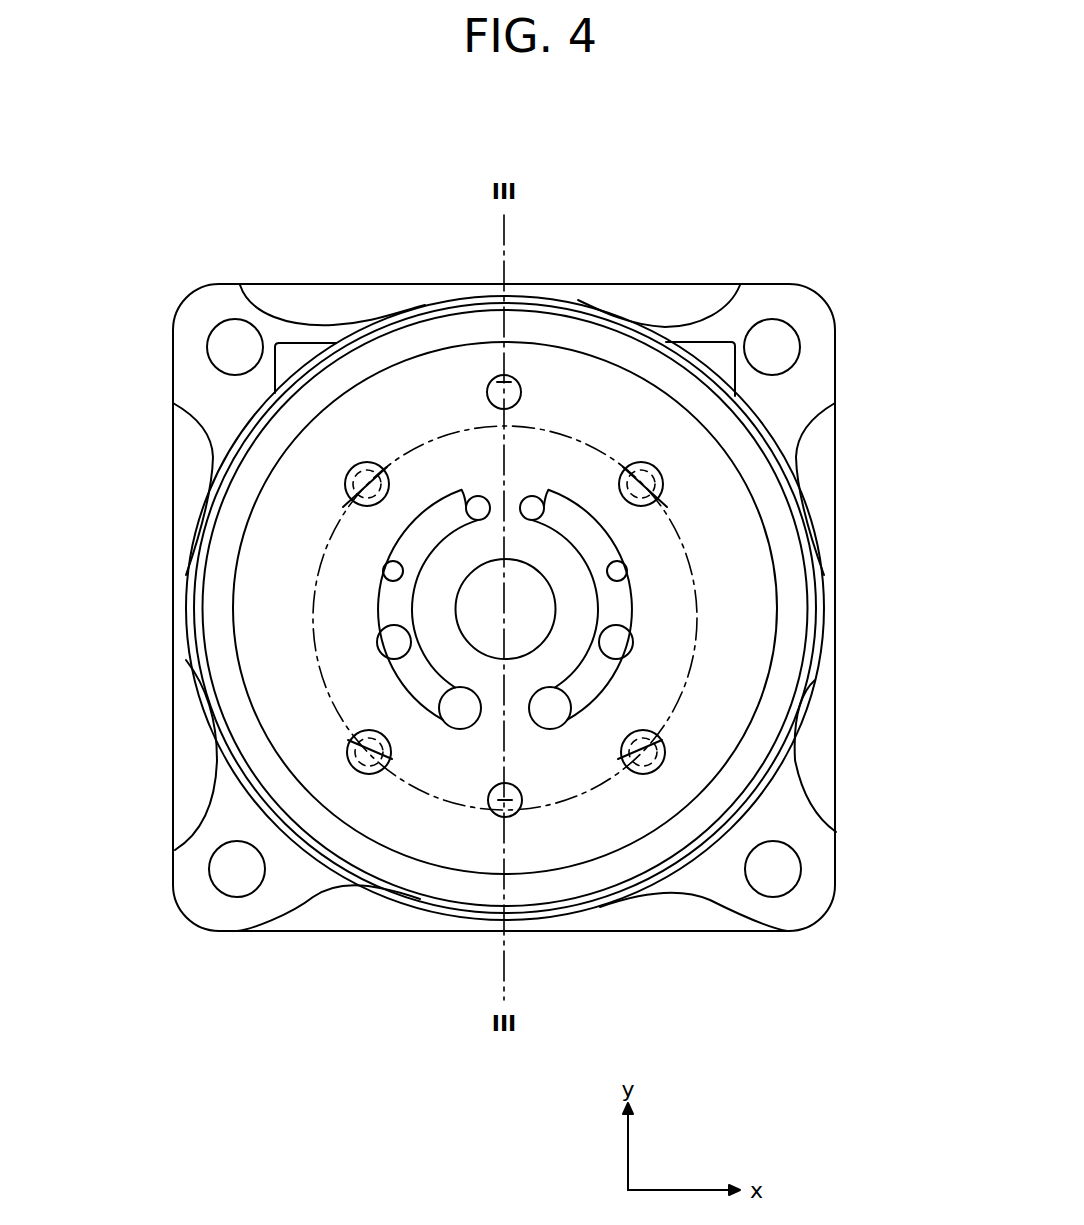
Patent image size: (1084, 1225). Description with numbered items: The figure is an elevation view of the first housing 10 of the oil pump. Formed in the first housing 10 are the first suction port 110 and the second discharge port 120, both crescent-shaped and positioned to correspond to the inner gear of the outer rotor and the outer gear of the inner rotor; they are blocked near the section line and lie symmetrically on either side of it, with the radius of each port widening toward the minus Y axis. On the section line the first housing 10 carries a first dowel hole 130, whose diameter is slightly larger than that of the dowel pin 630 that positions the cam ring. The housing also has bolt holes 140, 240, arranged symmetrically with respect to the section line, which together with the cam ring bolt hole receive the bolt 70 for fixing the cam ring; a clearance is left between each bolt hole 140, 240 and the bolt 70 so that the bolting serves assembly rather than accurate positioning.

The first housing 10 is at (606, 278).
The bolt 70 is at (367, 484).
The first suction port 110 is at (396, 567).
The second discharge port 120 is at (618, 560).
The first dowel hole 130 is at (497, 378).
The bolt hole 140 is at (348, 485).
The bolt hole 240 is at (528, 685).
The dowel pin 630 is at (514, 379).